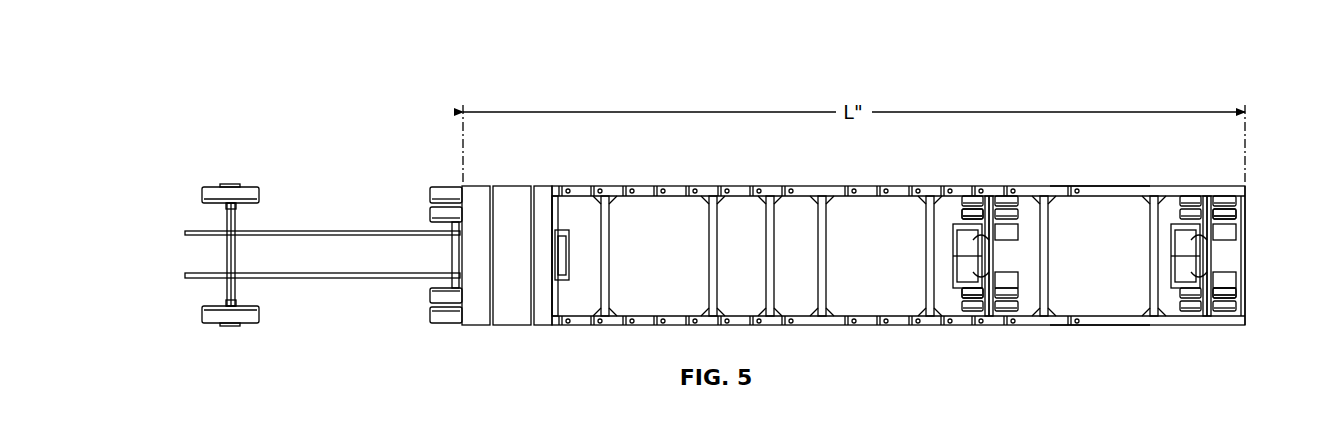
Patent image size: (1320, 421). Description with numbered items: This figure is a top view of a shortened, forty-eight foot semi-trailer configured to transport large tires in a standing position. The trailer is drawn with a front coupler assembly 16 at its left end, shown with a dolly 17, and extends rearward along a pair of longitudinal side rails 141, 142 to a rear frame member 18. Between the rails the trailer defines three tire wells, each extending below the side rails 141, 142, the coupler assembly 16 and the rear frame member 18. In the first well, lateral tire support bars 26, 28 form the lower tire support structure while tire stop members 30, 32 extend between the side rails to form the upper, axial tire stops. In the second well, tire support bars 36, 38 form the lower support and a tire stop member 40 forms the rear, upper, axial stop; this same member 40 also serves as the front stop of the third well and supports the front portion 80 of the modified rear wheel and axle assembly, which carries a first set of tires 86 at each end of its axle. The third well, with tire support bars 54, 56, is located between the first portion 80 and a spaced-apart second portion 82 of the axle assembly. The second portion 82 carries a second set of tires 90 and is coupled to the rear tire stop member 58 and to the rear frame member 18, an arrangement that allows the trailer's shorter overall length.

The dolly 17 is at (298, 222).
The coupler assembly 16 is at (458, 258).
The tire stop member 30 is at (557, 212).
The tire support member 26 is at (607, 270).
The tire support member 28 is at (716, 255).
The tire stop member 32 is at (771, 247).
The tire support member 36 is at (823, 247).
The tire support member 38 is at (931, 248).
The tire stop member 40 is at (987, 257).
The tire support member 54 is at (1045, 228).
The tire support member 56 is at (1154, 247).
The tire stop member 58 is at (1204, 196).
The first portion 80 is at (989, 330).
The second portion 82 is at (1218, 330).
The first set of tires 86 is at (1008, 213).
The second set of tires 90 is at (1232, 213).
The rear frame member 18 is at (1243, 253).
The side rail 141 is at (1110, 322).
The side rail 142 is at (1117, 190).